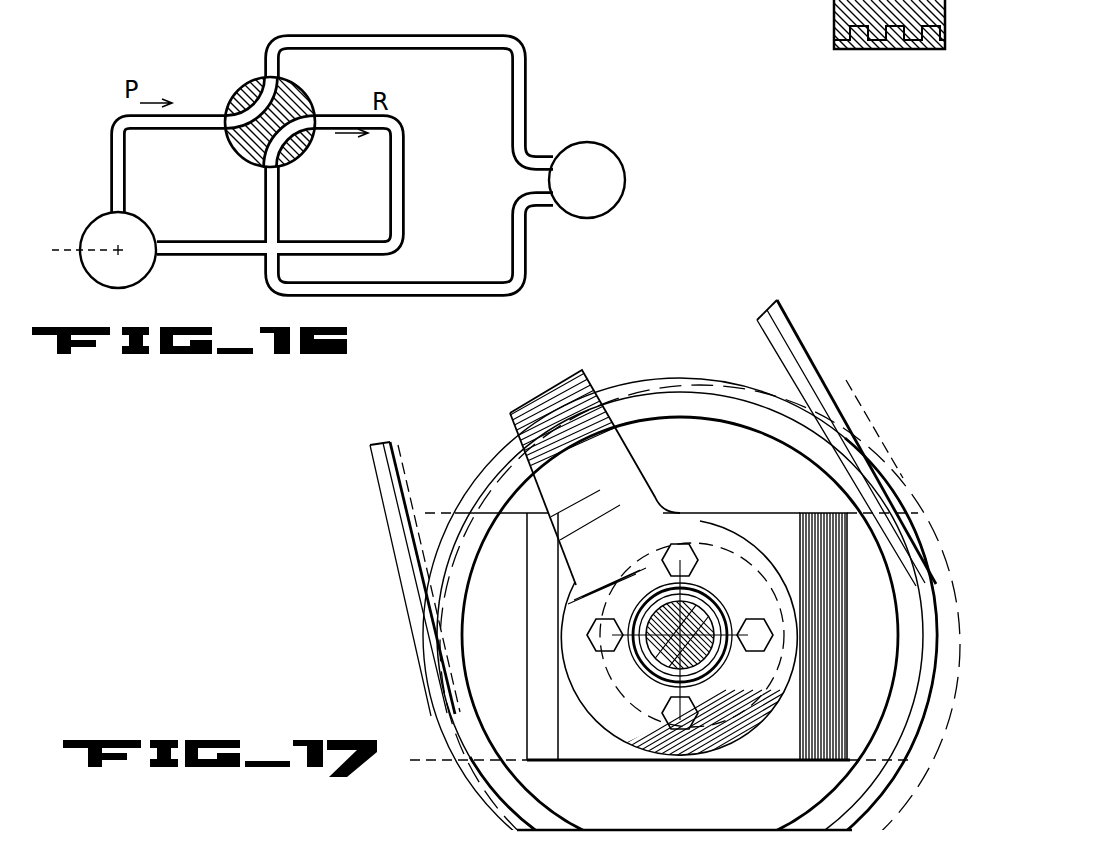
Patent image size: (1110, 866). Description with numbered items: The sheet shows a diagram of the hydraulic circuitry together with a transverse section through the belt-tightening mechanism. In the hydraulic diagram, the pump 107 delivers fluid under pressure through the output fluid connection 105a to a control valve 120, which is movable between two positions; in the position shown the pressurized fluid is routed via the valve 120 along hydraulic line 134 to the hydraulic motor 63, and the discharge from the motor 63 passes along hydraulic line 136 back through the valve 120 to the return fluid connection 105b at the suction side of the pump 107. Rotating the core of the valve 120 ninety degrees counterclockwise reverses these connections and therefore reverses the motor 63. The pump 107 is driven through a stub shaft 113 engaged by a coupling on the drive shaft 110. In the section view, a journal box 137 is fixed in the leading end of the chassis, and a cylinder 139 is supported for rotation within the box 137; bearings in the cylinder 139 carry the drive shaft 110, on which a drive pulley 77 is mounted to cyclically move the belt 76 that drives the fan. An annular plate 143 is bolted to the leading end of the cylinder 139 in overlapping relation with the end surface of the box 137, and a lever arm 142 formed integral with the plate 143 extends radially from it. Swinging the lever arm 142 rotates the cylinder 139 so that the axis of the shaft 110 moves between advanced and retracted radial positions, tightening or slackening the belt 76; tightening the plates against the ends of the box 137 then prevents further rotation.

In FIG. 15, the hydraulic line 134 is at (433, 8).
In FIG. 15, the control valve 120 is at (290, 100).
In FIG. 15, the fluid connection 105a is at (113, 177).
In FIG. 15, the fluid connection 105b is at (203, 247).
In FIG. 15, the stub shaft 113 is at (70, 213).
In FIG. 15, the pump 107 is at (115, 276).
In FIG. 15, the hydraulic line 136 is at (413, 288).
In FIG. 15, the hydraulic motor 63 is at (578, 208).
In FIG. 17, the lever arm 142 is at (597, 388).
In FIG. 17, the drive pulley 77 is at (478, 493).
In FIG. 17, the belt 76 is at (388, 537).
In FIG. 17, the drive shaft 110 is at (703, 607).
In FIG. 17, the cylinder 139 is at (610, 685).
In FIG. 17, the annular plate 143 is at (618, 722).
In FIG. 17, the journal box 137 is at (742, 765).